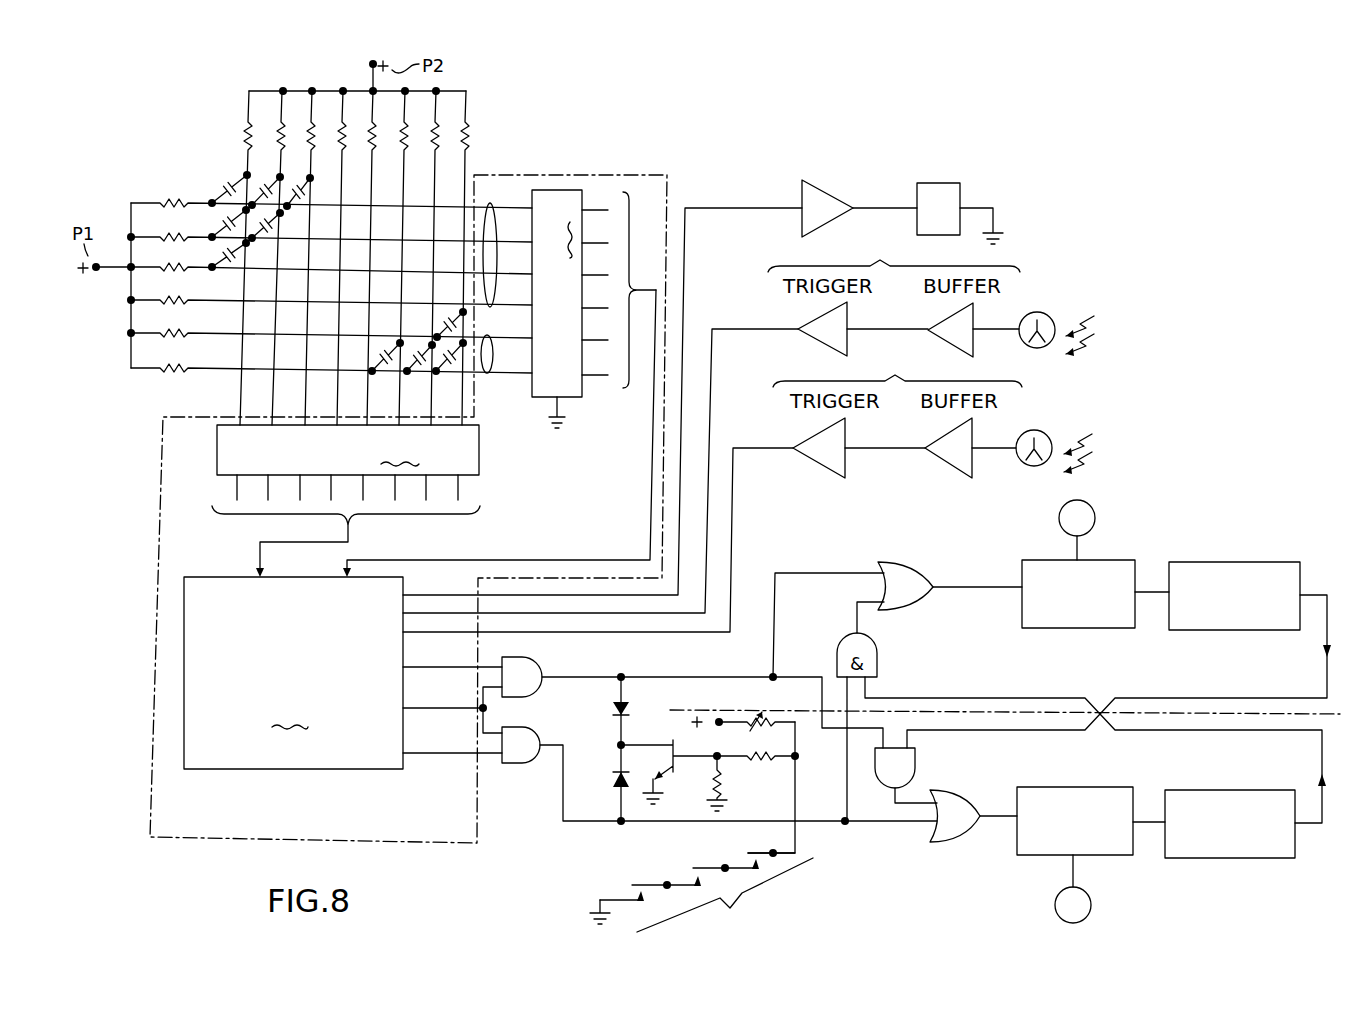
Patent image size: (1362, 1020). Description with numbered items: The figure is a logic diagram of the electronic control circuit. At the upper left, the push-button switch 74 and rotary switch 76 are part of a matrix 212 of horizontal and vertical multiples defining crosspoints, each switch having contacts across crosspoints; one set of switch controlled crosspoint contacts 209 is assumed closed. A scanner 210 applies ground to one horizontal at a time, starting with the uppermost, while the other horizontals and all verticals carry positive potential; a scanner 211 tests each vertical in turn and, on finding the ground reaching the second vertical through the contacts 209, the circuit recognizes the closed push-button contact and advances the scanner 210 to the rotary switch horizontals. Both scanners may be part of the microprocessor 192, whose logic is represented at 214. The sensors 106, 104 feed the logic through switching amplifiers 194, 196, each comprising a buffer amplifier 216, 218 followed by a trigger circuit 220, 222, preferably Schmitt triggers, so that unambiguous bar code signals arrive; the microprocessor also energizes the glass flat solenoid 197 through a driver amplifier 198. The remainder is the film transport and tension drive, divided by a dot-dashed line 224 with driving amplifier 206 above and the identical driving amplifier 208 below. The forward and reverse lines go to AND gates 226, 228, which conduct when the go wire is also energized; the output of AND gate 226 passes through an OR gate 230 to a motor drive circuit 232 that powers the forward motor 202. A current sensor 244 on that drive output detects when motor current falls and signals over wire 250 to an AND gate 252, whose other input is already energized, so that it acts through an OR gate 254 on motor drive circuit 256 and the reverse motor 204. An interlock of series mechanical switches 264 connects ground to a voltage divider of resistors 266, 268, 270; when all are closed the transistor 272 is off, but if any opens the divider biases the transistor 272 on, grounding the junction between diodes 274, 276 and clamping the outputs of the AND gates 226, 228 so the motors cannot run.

The push-button switch 74 is at (491, 203).
The rotary switch 76 is at (488, 374).
The sensor B 104 is at (1045, 433).
The sensor A 106 is at (1047, 316).
The microprocessor 192 is at (442, 841).
The switching amplifier 194 is at (894, 255).
The switching amplifier 196 is at (897, 370).
The glass flat solenoid 197 is at (960, 196).
The driver amplifier 198 is at (805, 219).
The forward motor 202 is at (1096, 519).
The reverse motor 204 is at (1092, 905).
The driving amplifier 206 is at (765, 677).
The driving amplifier 208 is at (838, 816).
The switch controlled crosspoint contacts 209 is at (268, 226).
The scanner 210 is at (594, 310).
The scanner 211 is at (346, 474).
The matrix 212 is at (203, 397).
The logic 214 is at (321, 673).
The buffer amplifier 216 is at (932, 320).
The buffer amplifier 218 is at (950, 463).
The trigger circuit 220 is at (810, 338).
The trigger circuit 222 is at (820, 456).
The dot-dashed line 224 is at (984, 717).
The AND gate 226 is at (540, 667).
The AND gate 228 is at (530, 768).
The OR gate 230 is at (918, 566).
The motor drive circuit 232 is at (1050, 628).
The current sensor 244 is at (1258, 562).
The wire 250 is at (1203, 705).
The AND gate 252 is at (917, 768).
The OR gate 254 is at (948, 843).
The motor drive circuit 256 is at (1065, 787).
The interlock switches 264 is at (915, 943).
The resistor 266 is at (758, 698).
The resistor 268 is at (760, 750).
The resistor 270 is at (727, 779).
The transistor 272 is at (672, 744).
The diode 274 is at (612, 712).
The diode 276 is at (613, 783).